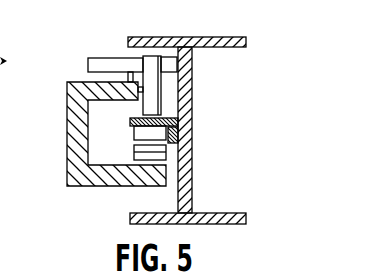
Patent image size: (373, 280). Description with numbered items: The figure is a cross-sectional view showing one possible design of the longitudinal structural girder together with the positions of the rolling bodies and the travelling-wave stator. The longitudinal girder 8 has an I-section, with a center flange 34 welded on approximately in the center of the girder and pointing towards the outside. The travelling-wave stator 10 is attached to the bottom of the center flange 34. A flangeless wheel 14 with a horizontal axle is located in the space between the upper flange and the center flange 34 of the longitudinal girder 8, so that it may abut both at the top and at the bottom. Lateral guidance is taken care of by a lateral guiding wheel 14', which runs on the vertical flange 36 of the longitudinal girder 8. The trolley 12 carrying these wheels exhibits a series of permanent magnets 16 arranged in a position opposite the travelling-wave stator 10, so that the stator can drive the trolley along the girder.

The longitudinal girder 8 is at (190, 73).
The vertical flange 36 is at (190, 163).
The trolley 12 is at (66, 135).
The flangeless wheel 14 is at (185, 86).
The lateral guiding wheel 14' is at (106, 51).
The center flange 34 is at (132, 122).
The travelling-wave stator 10 is at (140, 133).
The permanent magnet 16 is at (140, 150).